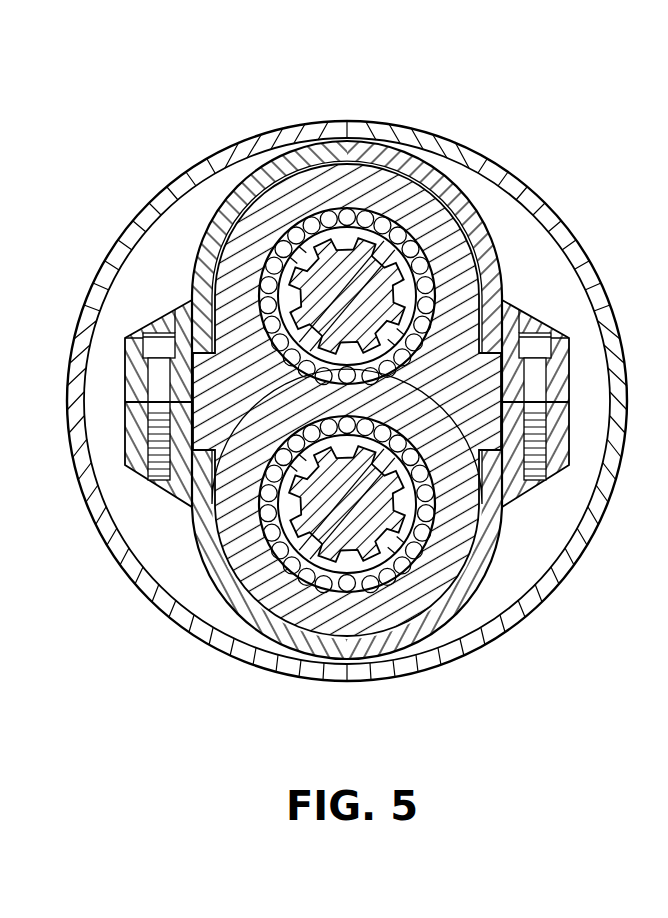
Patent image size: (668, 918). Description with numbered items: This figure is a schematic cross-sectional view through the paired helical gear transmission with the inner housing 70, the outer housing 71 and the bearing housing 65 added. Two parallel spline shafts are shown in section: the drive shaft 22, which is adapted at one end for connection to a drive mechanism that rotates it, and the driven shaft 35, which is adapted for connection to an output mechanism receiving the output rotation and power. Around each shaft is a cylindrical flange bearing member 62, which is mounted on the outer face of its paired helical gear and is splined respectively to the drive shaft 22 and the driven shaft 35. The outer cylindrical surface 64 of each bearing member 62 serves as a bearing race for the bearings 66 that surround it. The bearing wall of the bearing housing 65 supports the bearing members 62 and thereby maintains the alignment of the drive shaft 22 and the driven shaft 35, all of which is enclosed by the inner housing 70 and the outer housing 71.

The drive shaft 22 is at (457, 190).
The driven shaft 35 is at (402, 520).
The cylindrical flange bearing member 62 is at (313, 253).
The outer cylindrical surface 64 is at (378, 225).
The bearing housing 65 is at (247, 563).
The bearings 66 is at (347, 215).
The inner housing 70 is at (493, 263).
The outer housing 71 is at (590, 257).